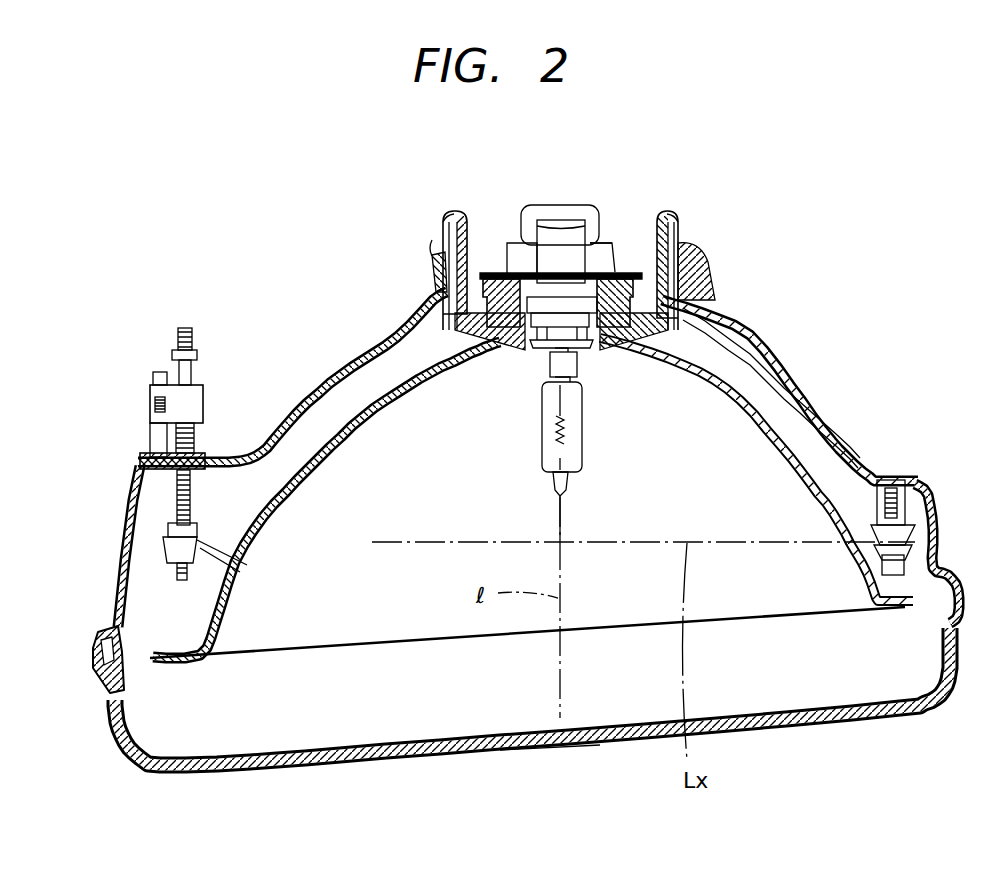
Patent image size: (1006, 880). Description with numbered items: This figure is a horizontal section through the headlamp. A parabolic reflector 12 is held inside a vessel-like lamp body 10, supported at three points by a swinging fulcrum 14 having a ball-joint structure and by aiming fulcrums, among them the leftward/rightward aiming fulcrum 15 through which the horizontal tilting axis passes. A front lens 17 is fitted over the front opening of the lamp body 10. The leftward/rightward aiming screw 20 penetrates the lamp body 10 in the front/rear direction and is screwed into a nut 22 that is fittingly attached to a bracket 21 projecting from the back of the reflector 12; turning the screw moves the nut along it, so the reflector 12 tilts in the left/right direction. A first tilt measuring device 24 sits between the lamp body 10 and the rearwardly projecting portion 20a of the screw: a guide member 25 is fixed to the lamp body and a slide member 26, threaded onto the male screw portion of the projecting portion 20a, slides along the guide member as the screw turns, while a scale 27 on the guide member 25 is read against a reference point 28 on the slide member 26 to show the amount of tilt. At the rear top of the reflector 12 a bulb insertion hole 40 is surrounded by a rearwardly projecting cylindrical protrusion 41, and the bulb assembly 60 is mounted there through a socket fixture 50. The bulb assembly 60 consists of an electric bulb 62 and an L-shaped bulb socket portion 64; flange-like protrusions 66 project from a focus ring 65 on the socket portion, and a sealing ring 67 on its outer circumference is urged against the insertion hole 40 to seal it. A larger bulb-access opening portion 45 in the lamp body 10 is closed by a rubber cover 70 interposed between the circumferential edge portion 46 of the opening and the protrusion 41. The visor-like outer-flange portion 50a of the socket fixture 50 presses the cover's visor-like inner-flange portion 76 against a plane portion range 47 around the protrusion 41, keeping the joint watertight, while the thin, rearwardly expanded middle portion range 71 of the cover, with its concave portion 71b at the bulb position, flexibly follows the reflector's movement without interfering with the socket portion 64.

The lamp body 10 is at (745, 335).
The parabolic reflector 12 is at (758, 408).
The swinging fulcrum 14 is at (908, 538).
The leftward/rightward aiming fulcrum 15 is at (153, 522).
The front lens 17 is at (553, 752).
The leftward/rightward aiming screw 20 is at (170, 500).
The rearwardly projecting portion 20a is at (195, 440).
The bracket 21 is at (165, 548).
The nut 22 is at (175, 565).
The first tilt measuring device 24 is at (139, 388).
The guide member 25 is at (150, 436).
The slide member 26 is at (190, 352).
The scale 27 is at (139, 382).
The reference point 28 is at (154, 404).
The bulb insertion hole 40 is at (596, 325).
The rearwardly projecting cylindrical protrusion 41 is at (445, 298).
The bulb-access opening portion 45 is at (466, 212).
The circumferential edge portion 46 is at (434, 265).
The plane portion range 47 is at (680, 302).
The socket fixture 50 is at (652, 262).
The visor-like outer-flange portion 50a is at (676, 252).
The bulb assembly 60 is at (546, 444).
The electric bulb 62 is at (585, 445).
The bulb socket portion 64 is at (561, 222).
The focus ring 65 is at (555, 272).
The flange-like protrusions 66 is at (503, 277).
The sealing ring 67 is at (518, 326).
The rubber cover 70 is at (435, 238).
The middle portion range 71 is at (452, 213).
The concave portion 71b is at (603, 244).
The visor-like inner-flange portion 76 is at (672, 328).